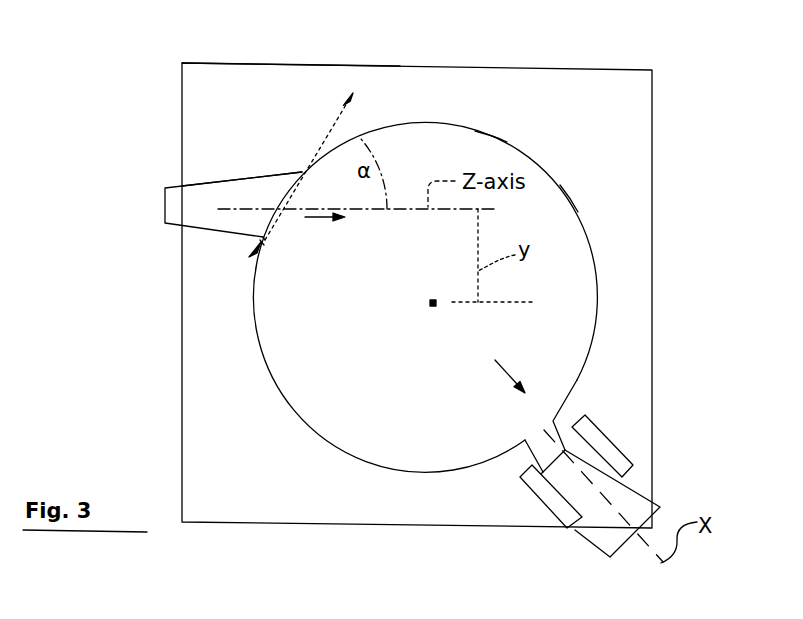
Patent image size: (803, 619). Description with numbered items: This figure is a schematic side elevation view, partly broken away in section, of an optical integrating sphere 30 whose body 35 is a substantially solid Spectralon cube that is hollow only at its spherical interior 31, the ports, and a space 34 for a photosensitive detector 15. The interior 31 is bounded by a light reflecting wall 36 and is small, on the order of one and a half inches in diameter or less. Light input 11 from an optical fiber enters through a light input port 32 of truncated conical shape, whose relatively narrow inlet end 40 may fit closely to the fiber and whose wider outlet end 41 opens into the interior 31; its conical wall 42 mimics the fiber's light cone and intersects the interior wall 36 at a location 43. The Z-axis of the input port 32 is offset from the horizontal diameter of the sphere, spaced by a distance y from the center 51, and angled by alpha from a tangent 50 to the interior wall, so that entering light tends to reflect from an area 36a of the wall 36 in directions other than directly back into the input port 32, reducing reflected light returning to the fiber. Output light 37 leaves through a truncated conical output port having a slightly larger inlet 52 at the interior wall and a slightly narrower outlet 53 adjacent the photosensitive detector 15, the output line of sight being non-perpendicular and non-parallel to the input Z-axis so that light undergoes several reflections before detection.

The light input 11 is at (318, 218).
The photosensitive detector 15 is at (596, 514).
The optical integrating sphere 30 is at (182, 107).
The interior 31 is at (530, 157).
The light input port 32 is at (180, 185).
The space for the photosensitive detector 34 is at (636, 418).
The body 35 is at (397, 87).
The light reflecting wall 36 is at (475, 131).
The area of the wall 36a is at (543, 183).
The output light 37 is at (533, 343).
The inlet end 40 is at (163, 208).
The outlet end 41 is at (260, 221).
The conical wall 42 is at (263, 230).
The location 43 is at (263, 243).
The tangent 50 is at (318, 125).
The center 51 is at (435, 308).
The inlet 52 is at (544, 430).
The outlet 53 is at (537, 495).